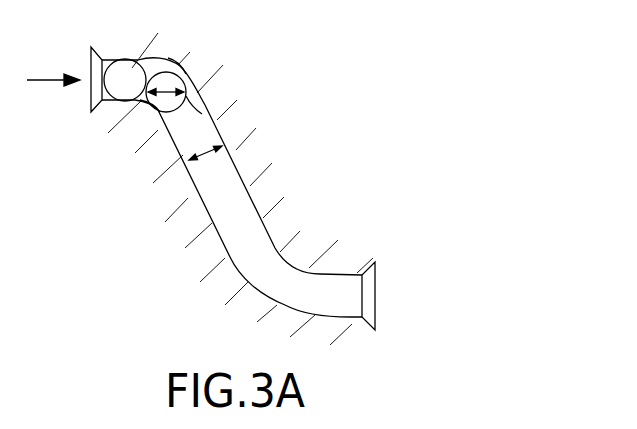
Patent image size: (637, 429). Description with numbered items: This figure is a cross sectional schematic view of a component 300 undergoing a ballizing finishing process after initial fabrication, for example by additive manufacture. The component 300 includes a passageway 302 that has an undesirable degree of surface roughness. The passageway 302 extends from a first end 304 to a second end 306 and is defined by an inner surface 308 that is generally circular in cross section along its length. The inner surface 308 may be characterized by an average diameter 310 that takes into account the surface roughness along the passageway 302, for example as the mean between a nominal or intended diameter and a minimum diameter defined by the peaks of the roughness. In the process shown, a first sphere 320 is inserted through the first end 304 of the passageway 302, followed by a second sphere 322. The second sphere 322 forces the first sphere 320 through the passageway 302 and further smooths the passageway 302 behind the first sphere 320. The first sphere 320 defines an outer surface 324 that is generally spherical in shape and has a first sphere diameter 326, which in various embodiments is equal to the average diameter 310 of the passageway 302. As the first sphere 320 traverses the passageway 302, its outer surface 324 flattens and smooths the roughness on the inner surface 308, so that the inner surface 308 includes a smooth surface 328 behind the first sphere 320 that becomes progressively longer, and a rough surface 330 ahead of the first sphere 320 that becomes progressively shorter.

The component 300 is at (238, 176).
The passageway 302 is at (237, 189).
The first end 304 is at (98, 55).
The second end 306 is at (372, 262).
The inner surface 308 is at (205, 204).
The average diameter 310 is at (188, 158).
The first sphere 320 is at (187, 78).
The second sphere 322 is at (130, 72).
The outer surface 324 is at (185, 104).
The first sphere diameter 326 is at (154, 109).
The smooth surface 328 is at (175, 63).
The rough surface 330 is at (265, 233).